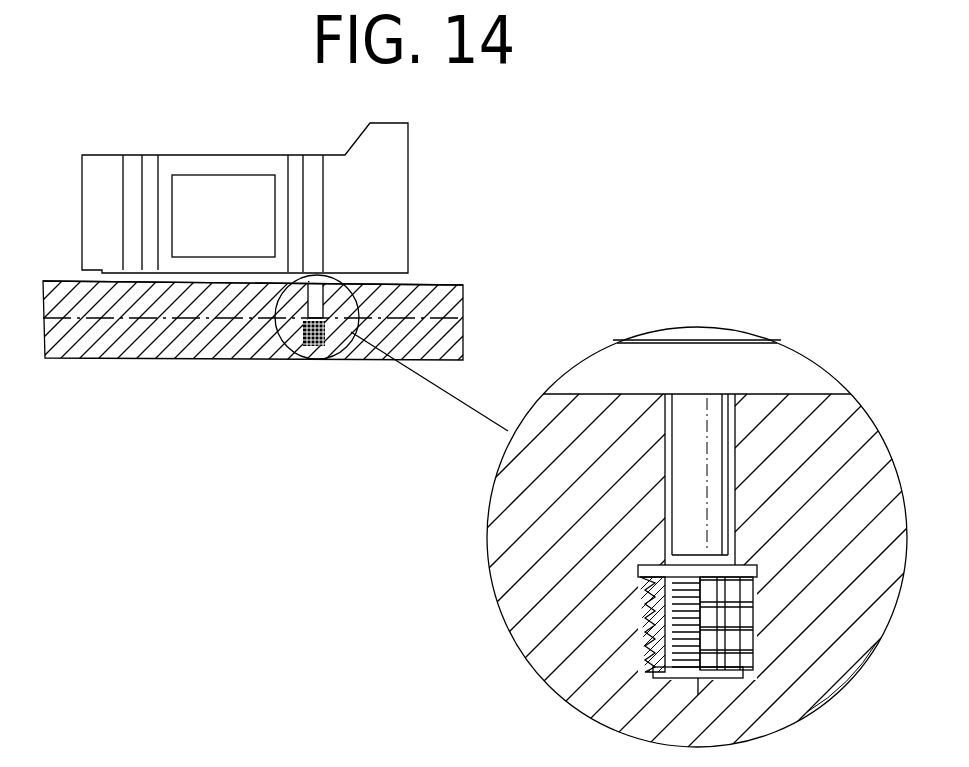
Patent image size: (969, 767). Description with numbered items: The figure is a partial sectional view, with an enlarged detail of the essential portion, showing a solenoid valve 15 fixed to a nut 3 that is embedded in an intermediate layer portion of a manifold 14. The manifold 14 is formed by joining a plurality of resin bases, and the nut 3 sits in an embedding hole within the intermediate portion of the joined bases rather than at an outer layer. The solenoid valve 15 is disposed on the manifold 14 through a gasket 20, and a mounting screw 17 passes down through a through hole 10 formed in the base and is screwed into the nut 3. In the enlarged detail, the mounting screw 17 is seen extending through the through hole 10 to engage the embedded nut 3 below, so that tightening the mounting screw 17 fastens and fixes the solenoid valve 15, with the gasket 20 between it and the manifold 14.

The solenoid valve 15 is at (397, 163).
The gasket 20 is at (377, 281).
The manifold 14 is at (452, 310).
The mounting screw 17 is at (688, 443).
The through hole 10 is at (665, 500).
The nut 3 is at (570, 577).